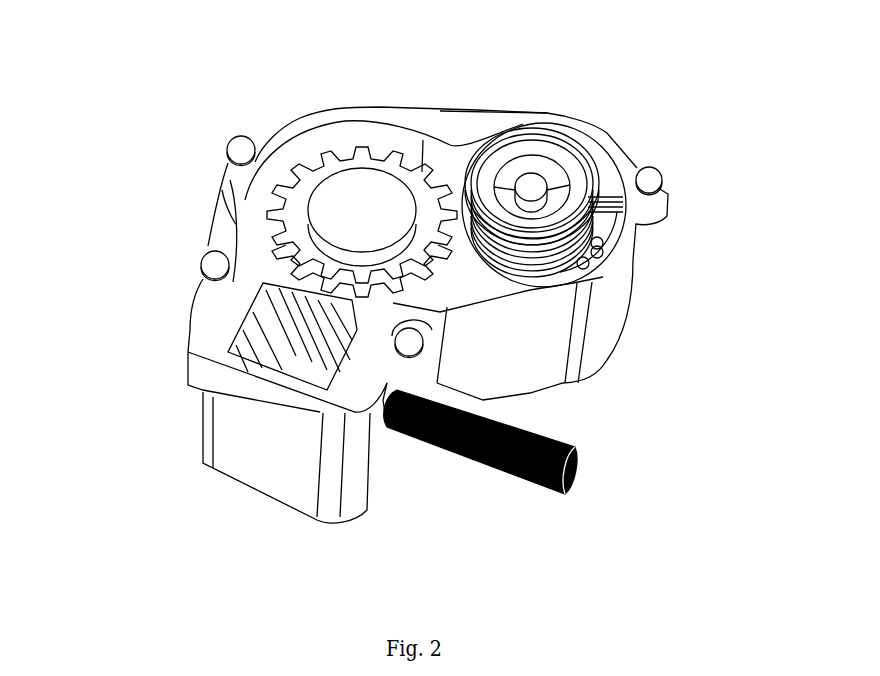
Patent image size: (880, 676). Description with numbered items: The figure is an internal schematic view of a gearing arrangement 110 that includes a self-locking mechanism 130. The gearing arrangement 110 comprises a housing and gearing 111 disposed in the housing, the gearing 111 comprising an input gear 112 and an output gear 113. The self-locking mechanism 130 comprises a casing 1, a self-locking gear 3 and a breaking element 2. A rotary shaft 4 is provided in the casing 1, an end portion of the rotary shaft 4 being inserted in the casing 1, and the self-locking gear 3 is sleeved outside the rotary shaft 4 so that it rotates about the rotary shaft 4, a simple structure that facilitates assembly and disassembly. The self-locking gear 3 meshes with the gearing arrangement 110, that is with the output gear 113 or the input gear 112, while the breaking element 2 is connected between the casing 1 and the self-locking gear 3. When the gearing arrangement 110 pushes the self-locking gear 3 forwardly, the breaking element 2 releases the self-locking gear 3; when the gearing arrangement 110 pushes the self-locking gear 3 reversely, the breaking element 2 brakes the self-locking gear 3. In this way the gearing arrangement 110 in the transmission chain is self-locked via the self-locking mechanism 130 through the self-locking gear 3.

The casing 1 is at (570, 120).
The breaking element 2 is at (522, 248).
The self-locking gear 3 is at (590, 254).
The rotary shaft 4 is at (536, 190).
The gearing arrangement 110 is at (206, 336).
The gearing 111 is at (292, 357).
The input gear 112 is at (360, 332).
The output gear 113 is at (237, 207).
The self-locking mechanism 130 is at (598, 150).